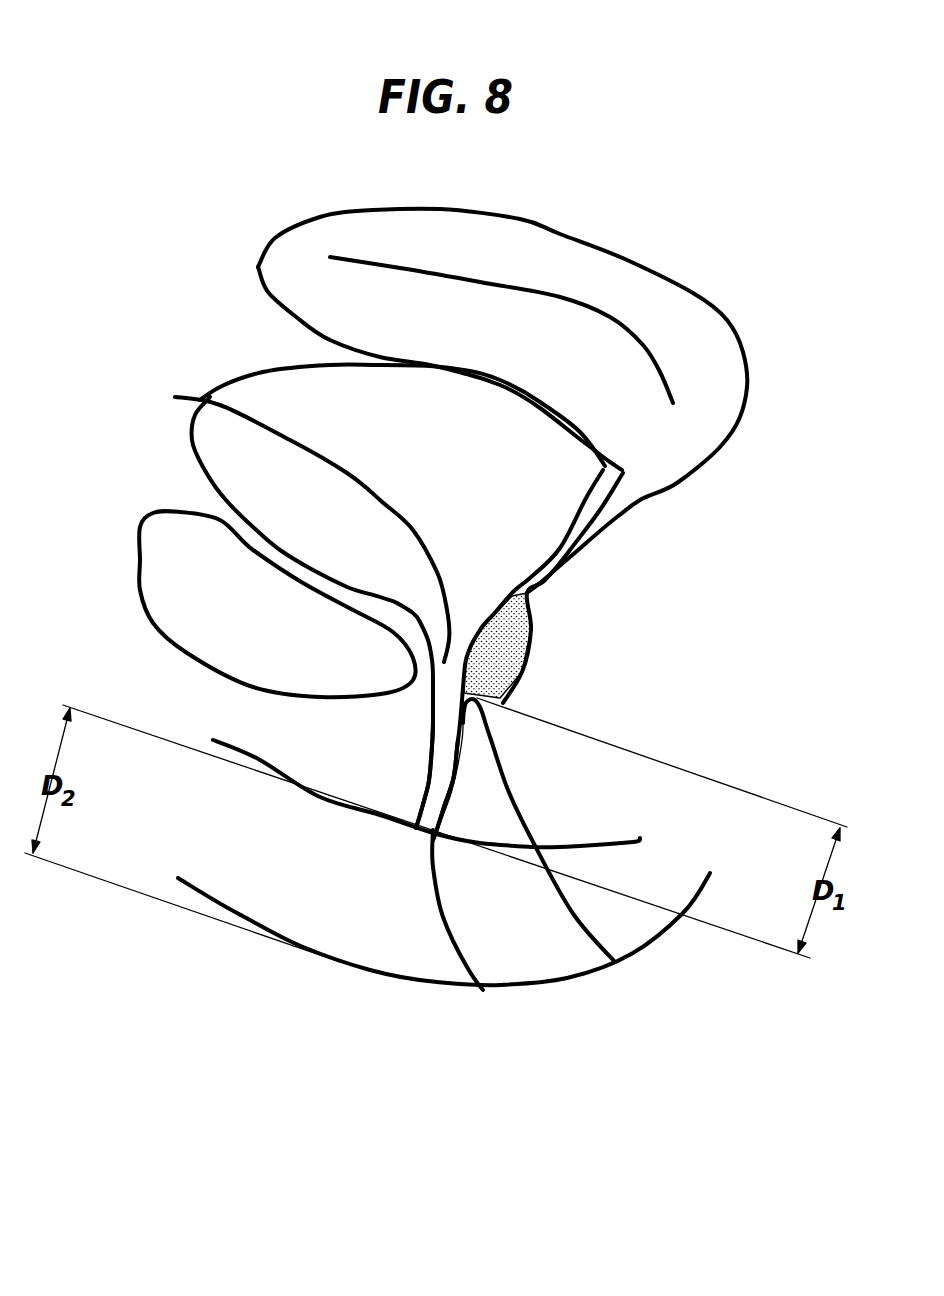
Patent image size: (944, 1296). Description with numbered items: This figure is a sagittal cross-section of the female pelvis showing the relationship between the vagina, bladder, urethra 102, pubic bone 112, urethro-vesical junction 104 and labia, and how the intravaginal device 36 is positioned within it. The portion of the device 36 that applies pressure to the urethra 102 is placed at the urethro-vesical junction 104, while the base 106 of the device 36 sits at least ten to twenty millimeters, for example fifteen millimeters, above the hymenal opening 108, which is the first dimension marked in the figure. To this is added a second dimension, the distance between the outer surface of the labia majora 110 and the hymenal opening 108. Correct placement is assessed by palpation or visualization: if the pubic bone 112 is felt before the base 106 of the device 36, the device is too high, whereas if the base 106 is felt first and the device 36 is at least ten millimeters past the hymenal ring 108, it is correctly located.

The urethro-vesical junction 104 is at (175, 397).
The pubic bone 112 is at (212, 592).
The urethra 102 is at (447, 752).
The device 36 is at (503, 657).
The base 106 is at (615, 962).
The hymenal opening 108 is at (483, 990).
The labia majora 110 is at (420, 957).